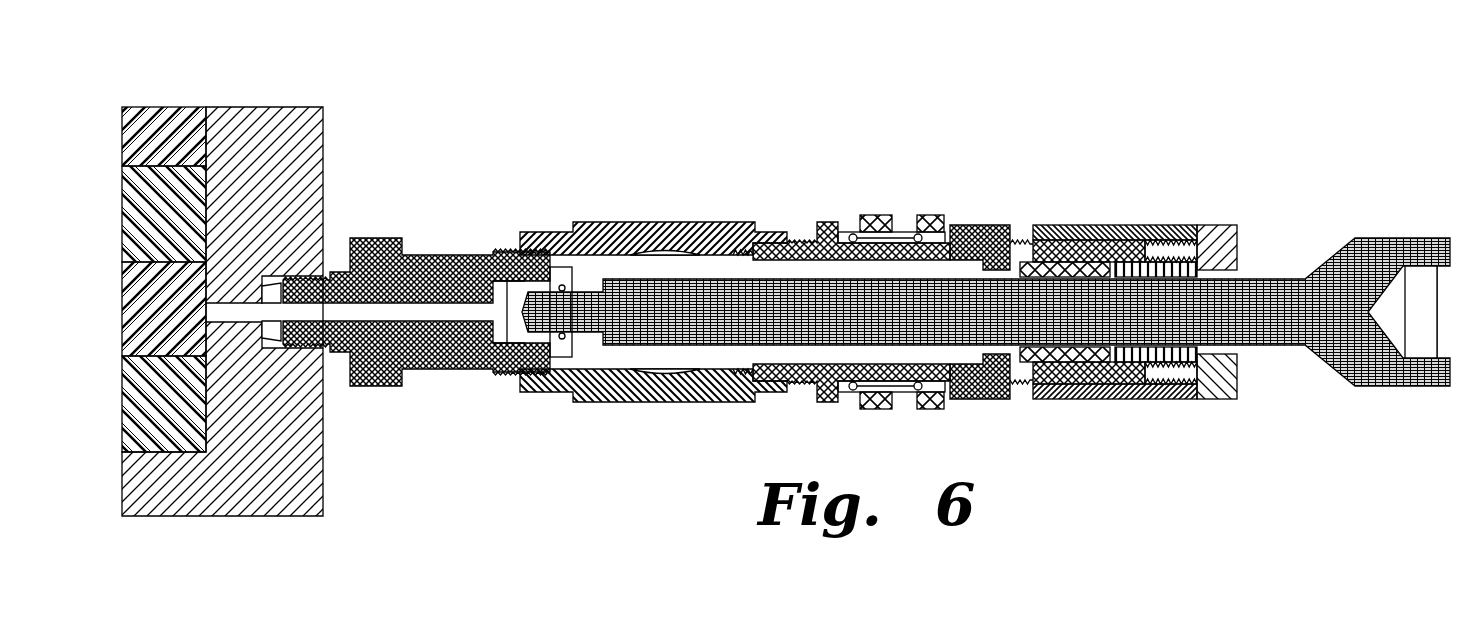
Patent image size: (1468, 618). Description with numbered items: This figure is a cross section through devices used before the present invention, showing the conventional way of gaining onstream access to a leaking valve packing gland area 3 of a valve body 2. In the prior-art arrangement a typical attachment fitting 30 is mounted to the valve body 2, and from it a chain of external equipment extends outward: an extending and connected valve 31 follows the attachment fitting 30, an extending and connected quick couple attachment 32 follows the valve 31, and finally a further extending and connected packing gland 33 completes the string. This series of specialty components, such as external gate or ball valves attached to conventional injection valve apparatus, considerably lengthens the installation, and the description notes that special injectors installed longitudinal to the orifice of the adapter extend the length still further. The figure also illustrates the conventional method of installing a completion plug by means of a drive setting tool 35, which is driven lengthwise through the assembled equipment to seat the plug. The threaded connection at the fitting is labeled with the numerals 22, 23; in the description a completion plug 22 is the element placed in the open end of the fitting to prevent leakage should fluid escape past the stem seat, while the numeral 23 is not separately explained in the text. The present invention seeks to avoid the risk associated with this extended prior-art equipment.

The valve body 2 is at (283, 135).
The valve packing gland area 3 is at (158, 132).
The completion plug 22 is at (491, 360).
The threaded connection 23 is at (520, 386).
The attachment fitting 30 is at (377, 237).
The extending and connected valve 31 is at (623, 222).
The quick couple attachment 32 is at (818, 222).
The packing gland 33 is at (973, 232).
The drive setting tool 35 is at (1290, 300).